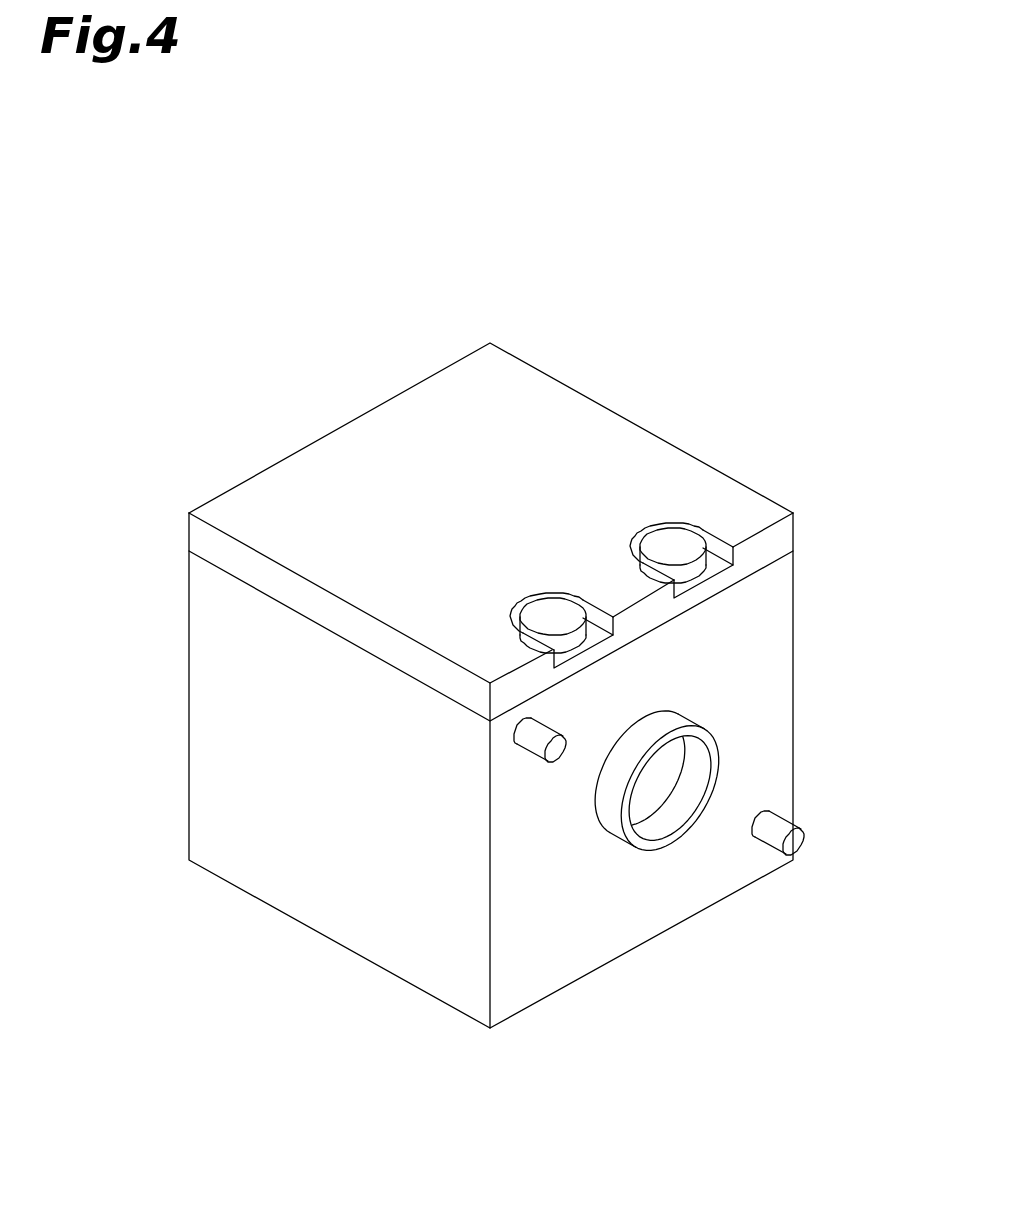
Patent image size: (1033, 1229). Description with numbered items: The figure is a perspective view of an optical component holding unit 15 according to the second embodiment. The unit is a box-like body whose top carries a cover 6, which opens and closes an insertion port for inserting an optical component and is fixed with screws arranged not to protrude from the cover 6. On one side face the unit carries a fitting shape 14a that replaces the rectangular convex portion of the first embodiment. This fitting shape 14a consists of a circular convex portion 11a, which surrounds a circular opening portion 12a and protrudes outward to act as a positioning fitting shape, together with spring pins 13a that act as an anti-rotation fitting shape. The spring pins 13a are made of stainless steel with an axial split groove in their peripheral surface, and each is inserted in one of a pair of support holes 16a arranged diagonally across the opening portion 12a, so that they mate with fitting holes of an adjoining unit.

The optical component holding unit 15 is at (257, 243).
The cover 6 is at (600, 487).
The circular opening portion 12a is at (716, 773).
The support holes 16a is at (520, 725).
The spring pins 13a is at (524, 742).
The circular convex portion 11a is at (613, 787).
The fitting shape 14a is at (770, 1069).